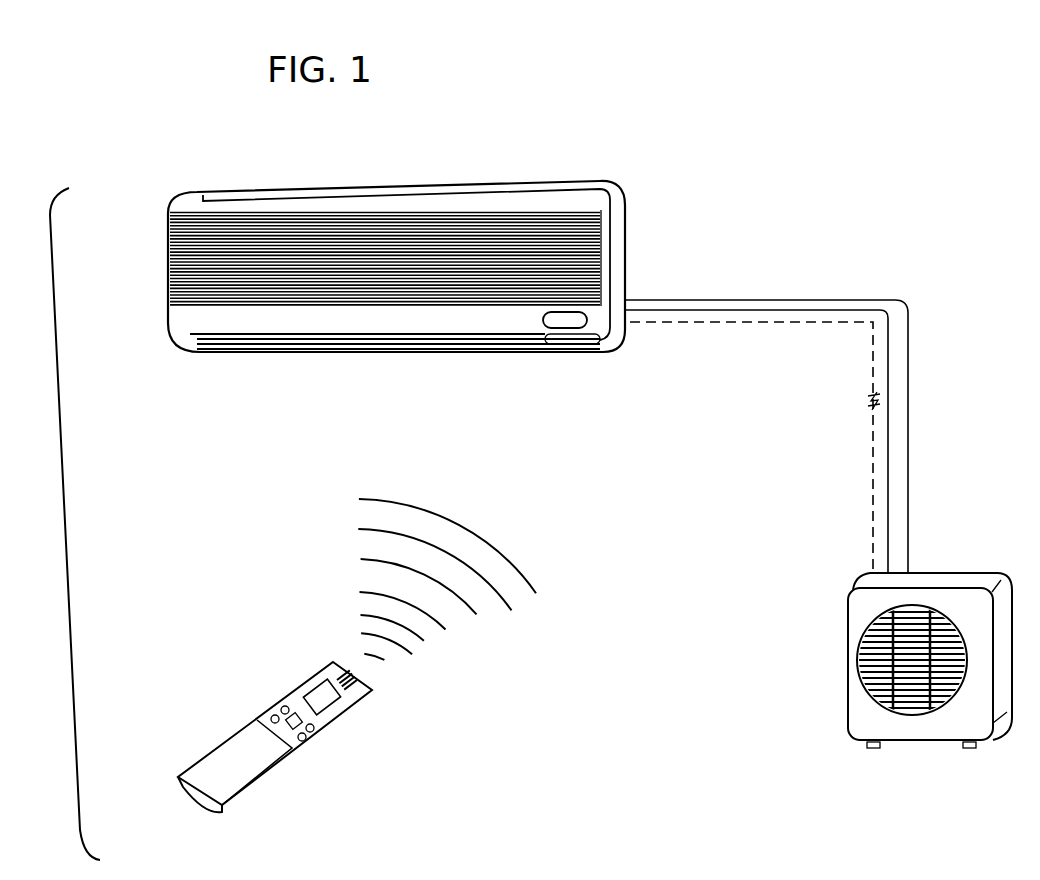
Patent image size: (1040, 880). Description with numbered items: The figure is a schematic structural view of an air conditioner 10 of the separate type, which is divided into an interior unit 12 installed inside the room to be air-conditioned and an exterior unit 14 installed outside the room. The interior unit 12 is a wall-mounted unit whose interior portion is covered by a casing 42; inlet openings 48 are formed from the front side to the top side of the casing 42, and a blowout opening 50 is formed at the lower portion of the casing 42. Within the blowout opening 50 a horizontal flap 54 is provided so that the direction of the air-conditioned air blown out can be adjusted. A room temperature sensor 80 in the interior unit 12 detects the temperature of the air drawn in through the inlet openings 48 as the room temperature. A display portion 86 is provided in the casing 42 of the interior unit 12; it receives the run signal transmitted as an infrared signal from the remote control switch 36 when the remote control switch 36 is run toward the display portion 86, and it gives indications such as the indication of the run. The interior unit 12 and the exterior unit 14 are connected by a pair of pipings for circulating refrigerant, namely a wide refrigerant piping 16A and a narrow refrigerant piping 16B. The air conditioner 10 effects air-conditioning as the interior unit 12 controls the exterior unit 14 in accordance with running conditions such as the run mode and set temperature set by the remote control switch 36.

The air conditioner 10 is at (744, 166).
The interior unit 12 is at (439, 272).
The exterior unit 14 is at (841, 611).
The wide refrigerant piping 16A is at (910, 438).
The narrow refrigerant piping 16B is at (892, 403).
The remote control switch 36 is at (255, 701).
The casing 42 is at (513, 181).
The inlet openings 48 is at (440, 210).
The blowout opening 50 is at (395, 378).
The horizontal flap 54 is at (377, 352).
The room temperature sensor 80 is at (517, 211).
The display portion 86 is at (596, 335).